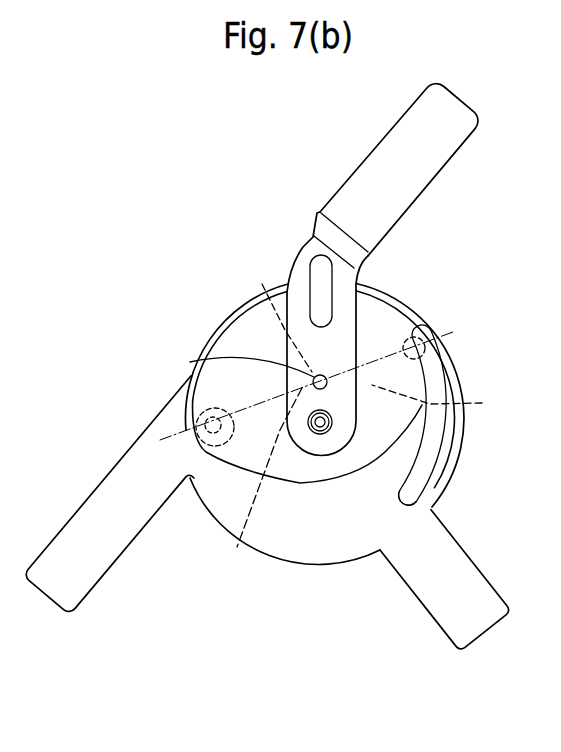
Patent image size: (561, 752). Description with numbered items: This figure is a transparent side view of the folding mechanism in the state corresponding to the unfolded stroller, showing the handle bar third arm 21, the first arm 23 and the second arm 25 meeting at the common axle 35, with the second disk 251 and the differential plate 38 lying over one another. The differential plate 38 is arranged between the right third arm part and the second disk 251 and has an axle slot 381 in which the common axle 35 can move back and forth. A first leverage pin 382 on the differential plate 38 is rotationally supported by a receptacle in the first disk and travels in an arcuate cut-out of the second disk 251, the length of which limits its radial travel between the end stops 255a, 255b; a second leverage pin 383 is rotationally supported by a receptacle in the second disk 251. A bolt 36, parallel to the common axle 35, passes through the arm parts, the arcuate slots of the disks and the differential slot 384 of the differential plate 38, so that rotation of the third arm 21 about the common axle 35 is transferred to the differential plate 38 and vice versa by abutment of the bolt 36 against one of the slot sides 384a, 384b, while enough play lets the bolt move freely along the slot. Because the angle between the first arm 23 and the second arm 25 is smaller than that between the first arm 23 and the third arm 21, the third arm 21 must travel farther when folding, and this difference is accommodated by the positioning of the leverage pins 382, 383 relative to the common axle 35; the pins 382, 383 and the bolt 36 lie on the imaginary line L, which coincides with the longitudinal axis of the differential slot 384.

The third arm 21 is at (415, 120).
The first arm 23 is at (478, 586).
The second arm 25 is at (80, 530).
The second disk 251 is at (315, 558).
The end stop 255a is at (431, 325).
The end stop 255b is at (430, 491).
The common axle 35 is at (333, 426).
The bolt 36 is at (230, 366).
The differential plate 38 is at (226, 343).
The axle slot 381 is at (260, 481).
The first leverage pin 382 is at (440, 369).
The second leverage pin 383 is at (190, 413).
The differential slot 384 is at (352, 343).
The first hidden arm of slider 384a is at (270, 315).
The second hidden arm of slider 384b is at (447, 399).
The imaginary line L is at (314, 379).